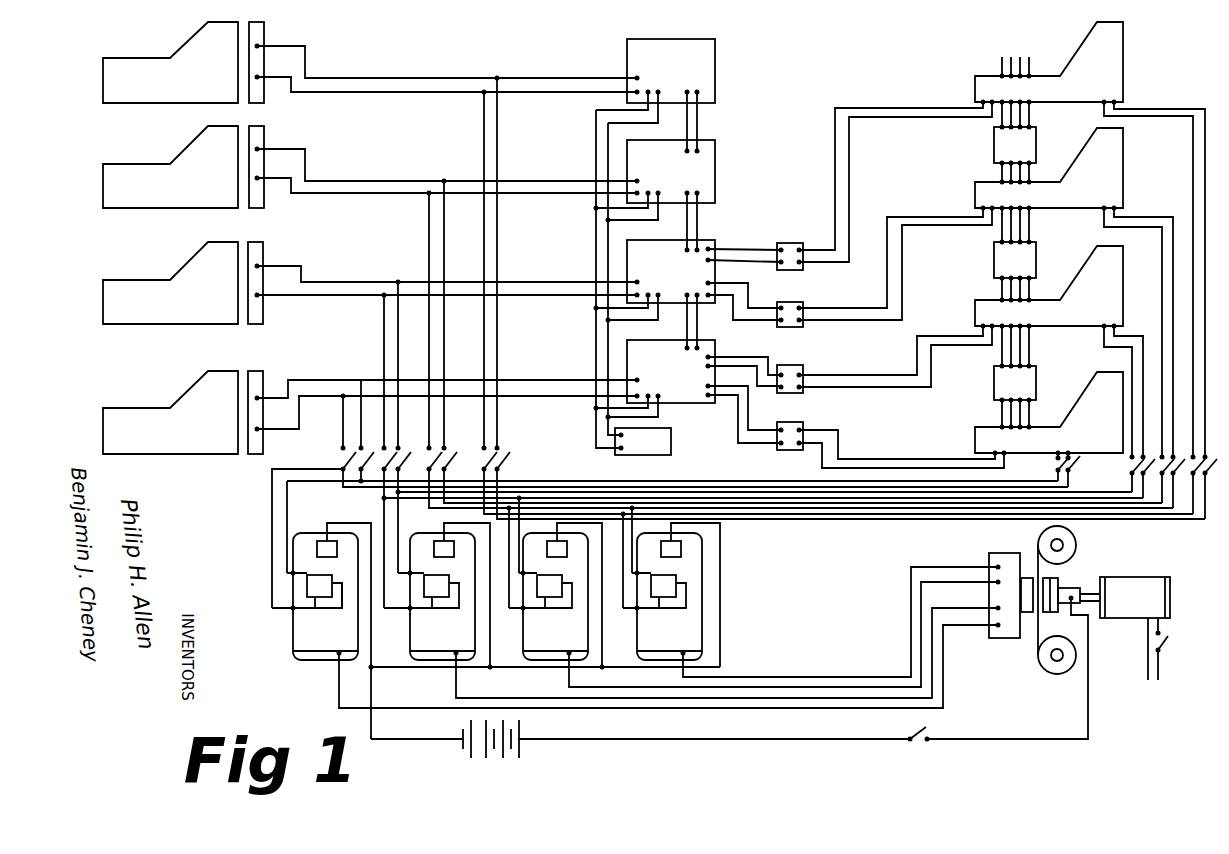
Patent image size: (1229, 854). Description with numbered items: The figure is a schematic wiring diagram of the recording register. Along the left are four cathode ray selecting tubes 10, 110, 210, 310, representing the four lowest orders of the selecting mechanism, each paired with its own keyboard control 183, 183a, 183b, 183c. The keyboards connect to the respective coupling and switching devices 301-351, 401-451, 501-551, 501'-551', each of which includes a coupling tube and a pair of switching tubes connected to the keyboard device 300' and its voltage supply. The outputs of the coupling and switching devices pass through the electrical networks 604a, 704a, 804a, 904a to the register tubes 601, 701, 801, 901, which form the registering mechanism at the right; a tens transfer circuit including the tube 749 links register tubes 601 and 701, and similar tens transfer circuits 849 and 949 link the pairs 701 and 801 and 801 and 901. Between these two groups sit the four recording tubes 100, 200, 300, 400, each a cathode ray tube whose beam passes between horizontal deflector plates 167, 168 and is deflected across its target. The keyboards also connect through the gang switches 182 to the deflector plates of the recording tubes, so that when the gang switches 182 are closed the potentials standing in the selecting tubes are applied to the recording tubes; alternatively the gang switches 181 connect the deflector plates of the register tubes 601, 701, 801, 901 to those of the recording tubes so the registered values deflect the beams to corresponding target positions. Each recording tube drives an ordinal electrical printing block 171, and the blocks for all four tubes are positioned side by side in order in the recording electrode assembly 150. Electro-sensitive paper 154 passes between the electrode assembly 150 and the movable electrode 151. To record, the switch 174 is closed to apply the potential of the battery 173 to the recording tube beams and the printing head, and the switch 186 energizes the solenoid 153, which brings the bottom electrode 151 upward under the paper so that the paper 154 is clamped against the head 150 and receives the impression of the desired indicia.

The cathode ray tube 10 is at (170, 412).
The cathode ray tube 110 is at (170, 283).
The cathode ray tube 210 is at (170, 167).
The cathode ray tube 310 is at (170, 62).
The keyboard control 183 is at (266, 388).
The keyboard control 183a is at (266, 252).
The keyboard control 183b is at (266, 140).
The keyboard control 183c is at (266, 40).
The gang switches 182 is at (338, 457).
The gang switches 181 is at (1209, 519).
The coupling and switching device 501'-551' is at (655, 95).
The coupling and switching device 501-551 is at (655, 196).
The coupling and switching device 401-451 is at (688, 294).
The coupling and switching device 301-351 is at (688, 391).
The keyboard device 300' is at (643, 441).
The electrical network 904a is at (778, 244).
The electrical network 804a is at (795, 302).
The electrical network 704a is at (795, 365).
The electrical network 604a is at (800, 422).
The register tube 901 is at (1090, 239).
The register tube 801 is at (1074, 292).
The register tube 701 is at (1059, 351).
The register tube 601 is at (1049, 414).
The tens transfer circuit 949 is at (1015, 142).
The tens transfer circuit 849 is at (1015, 254).
The tube 749 is at (1015, 377).
The recording tube 100 is at (321, 595).
The recording tube 200 is at (437, 595).
The recording tube 300 is at (555, 595).
The recording tube 400 is at (671, 595).
The horizontal deflector plate 167 is at (333, 577).
The horizontal deflector plate 168 is at (336, 610).
The recording electrode assembly 150 is at (989, 558).
The electrode block 171 is at (1034, 576).
The electro-sensitive paper 154 is at (1046, 573).
The movable electrode 151 is at (1062, 580).
The solenoid 153 is at (1141, 578).
The switch 186 is at (1166, 639).
The battery 173 is at (512, 757).
The switch 174 is at (906, 742).